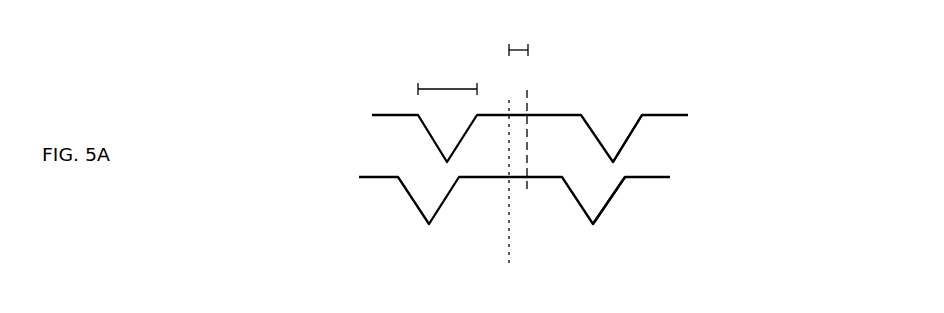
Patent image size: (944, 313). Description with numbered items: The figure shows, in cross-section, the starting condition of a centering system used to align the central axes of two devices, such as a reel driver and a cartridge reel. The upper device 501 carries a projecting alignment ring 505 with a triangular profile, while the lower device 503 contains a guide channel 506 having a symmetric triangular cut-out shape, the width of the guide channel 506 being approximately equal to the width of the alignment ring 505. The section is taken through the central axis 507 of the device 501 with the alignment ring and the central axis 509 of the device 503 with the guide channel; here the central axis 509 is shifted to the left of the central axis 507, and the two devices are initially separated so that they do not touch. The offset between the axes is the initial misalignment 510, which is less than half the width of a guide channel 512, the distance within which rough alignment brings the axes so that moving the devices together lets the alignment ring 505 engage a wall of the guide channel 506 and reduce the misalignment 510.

The device having an alignment ring 501 is at (360, 116).
The device having a guide channel 503 is at (353, 177).
The alignment ring 505 is at (626, 151).
The guide channel 506 is at (597, 213).
The central axis of the device with the alignment ring 507 is at (536, 158).
The central axis of the device with the guide channel 509 is at (506, 198).
The initial misalignment 510 is at (520, 35).
The half the width of a guide channel 512 is at (447, 76).